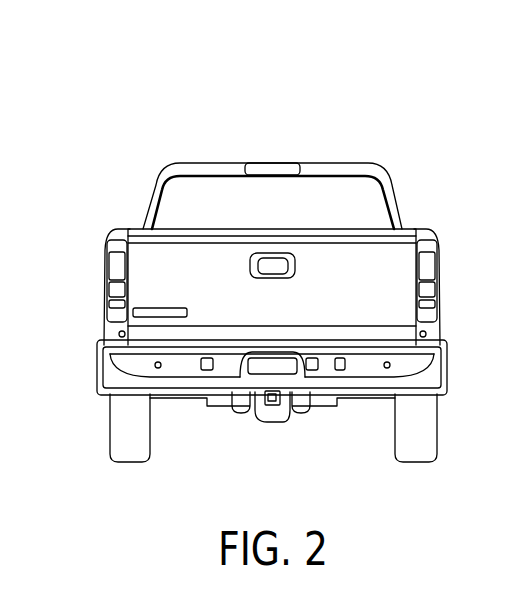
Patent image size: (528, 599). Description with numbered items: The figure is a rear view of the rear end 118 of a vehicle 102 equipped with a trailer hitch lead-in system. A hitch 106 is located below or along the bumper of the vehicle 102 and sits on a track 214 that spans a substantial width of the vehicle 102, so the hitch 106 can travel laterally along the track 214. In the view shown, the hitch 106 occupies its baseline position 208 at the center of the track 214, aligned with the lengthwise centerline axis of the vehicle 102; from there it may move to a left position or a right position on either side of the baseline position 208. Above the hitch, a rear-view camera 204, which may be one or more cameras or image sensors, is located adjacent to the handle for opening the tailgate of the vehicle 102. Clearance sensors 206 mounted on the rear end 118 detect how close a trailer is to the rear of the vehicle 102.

The vehicle 102 is at (163, 104).
The hitch 106 is at (273, 405).
The rear end 118 is at (368, 416).
The rear-view camera 204 is at (266, 262).
The clearance sensors 206 is at (119, 333).
The baseline position 208 is at (310, 424).
The track 214 is at (218, 394).